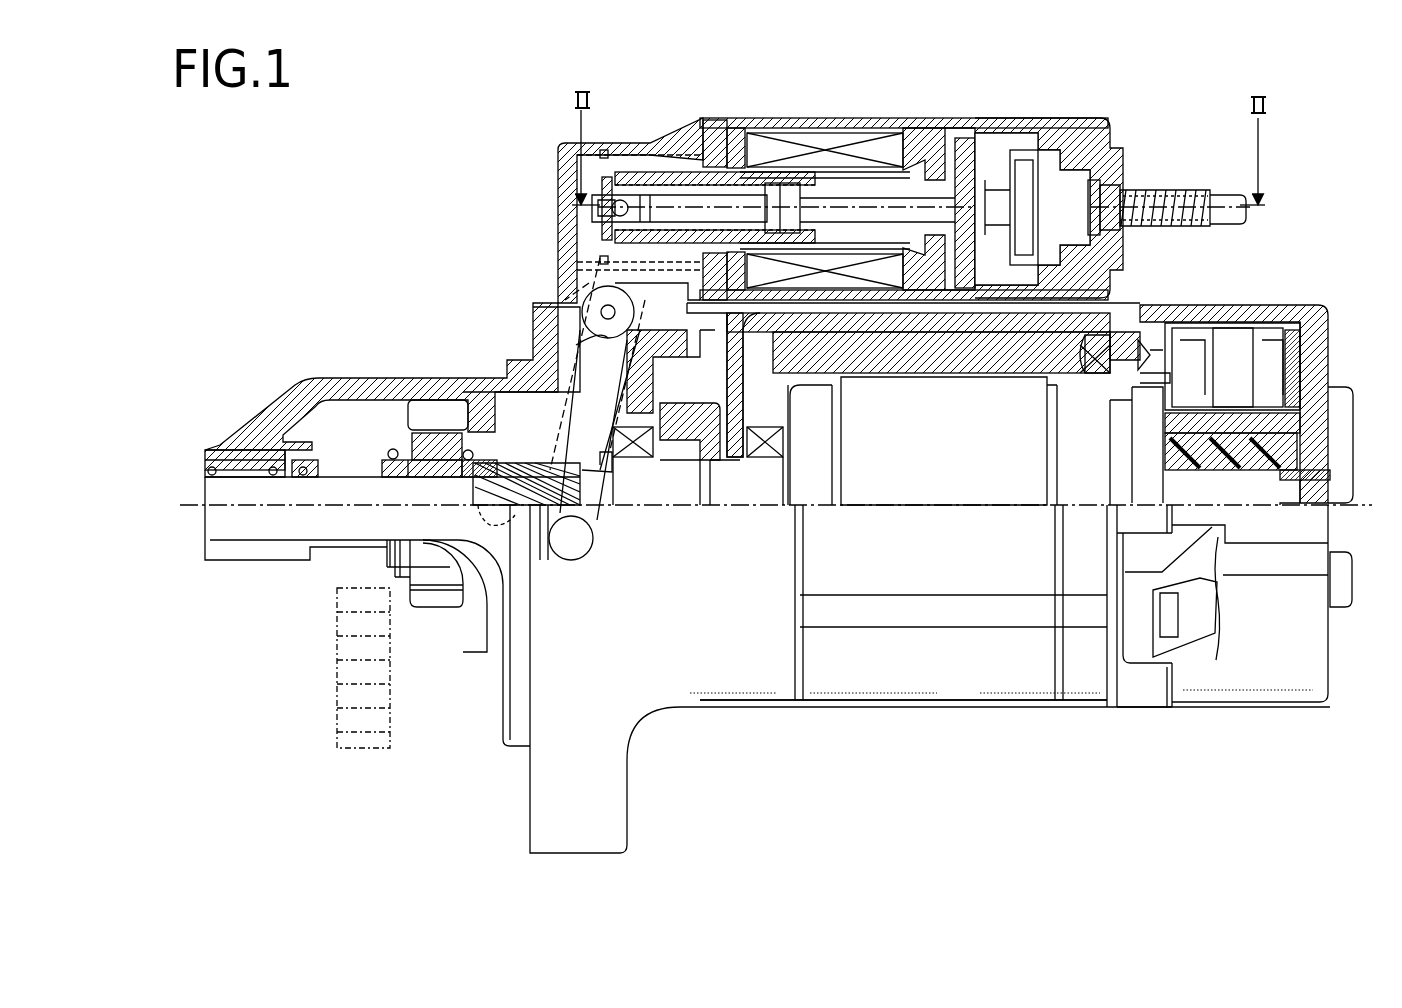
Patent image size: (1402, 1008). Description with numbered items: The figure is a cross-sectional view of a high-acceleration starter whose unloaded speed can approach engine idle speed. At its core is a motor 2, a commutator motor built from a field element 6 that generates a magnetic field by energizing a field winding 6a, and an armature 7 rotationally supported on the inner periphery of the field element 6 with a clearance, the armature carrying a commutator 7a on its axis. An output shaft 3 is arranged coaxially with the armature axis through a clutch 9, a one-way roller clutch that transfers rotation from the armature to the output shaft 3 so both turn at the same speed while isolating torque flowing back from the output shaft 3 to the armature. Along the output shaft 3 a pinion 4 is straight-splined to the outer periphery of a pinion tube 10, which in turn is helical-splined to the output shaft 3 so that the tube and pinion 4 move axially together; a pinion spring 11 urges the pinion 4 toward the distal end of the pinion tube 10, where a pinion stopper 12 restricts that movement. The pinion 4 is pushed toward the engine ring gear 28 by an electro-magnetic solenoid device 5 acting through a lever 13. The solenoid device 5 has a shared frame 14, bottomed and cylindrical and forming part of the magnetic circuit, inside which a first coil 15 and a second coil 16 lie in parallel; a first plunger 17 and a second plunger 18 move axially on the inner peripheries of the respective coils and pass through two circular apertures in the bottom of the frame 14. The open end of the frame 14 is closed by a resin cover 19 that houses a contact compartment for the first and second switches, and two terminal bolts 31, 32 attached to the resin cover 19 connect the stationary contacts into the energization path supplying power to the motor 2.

The motor 2 is at (1045, 714).
The output shaft 3 is at (308, 397).
The pinion 4 is at (430, 443).
The electro-magnetic solenoid device 5 is at (908, 114).
The field element 6 is at (937, 365).
The field winding 6a is at (1137, 302).
The armature 7 is at (993, 470).
The commutator 7a is at (1313, 448).
The clutch 9 is at (683, 458).
The pinion tube 10 is at (450, 460).
The pinion spring 11 is at (472, 462).
The pinion stopper 12 is at (400, 455).
The lever 13 is at (590, 262).
The frame 14 is at (851, 118).
The first coil 15 is at (817, 142).
The second coil 16 is at (825, 265).
The first plunger 17 is at (687, 178).
The second plunger 18 is at (606, 208).
The resin cover 19 is at (1077, 150).
The ring gear 28 is at (345, 600).
The terminal bolt 31 is at (1168, 197).
The terminal bolt 32 is at (1165, 208).